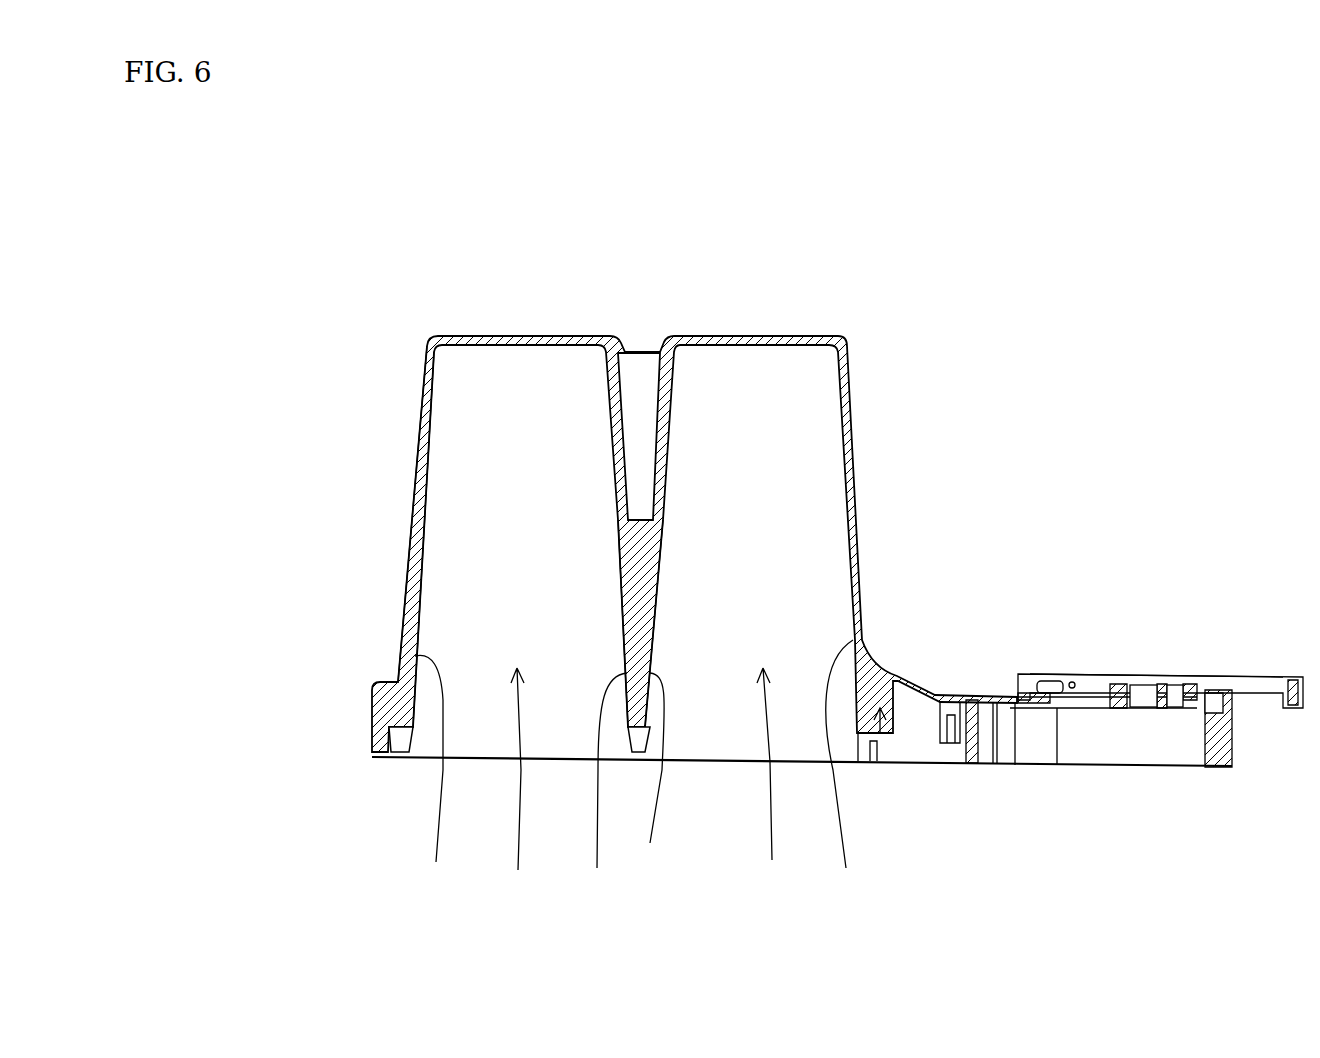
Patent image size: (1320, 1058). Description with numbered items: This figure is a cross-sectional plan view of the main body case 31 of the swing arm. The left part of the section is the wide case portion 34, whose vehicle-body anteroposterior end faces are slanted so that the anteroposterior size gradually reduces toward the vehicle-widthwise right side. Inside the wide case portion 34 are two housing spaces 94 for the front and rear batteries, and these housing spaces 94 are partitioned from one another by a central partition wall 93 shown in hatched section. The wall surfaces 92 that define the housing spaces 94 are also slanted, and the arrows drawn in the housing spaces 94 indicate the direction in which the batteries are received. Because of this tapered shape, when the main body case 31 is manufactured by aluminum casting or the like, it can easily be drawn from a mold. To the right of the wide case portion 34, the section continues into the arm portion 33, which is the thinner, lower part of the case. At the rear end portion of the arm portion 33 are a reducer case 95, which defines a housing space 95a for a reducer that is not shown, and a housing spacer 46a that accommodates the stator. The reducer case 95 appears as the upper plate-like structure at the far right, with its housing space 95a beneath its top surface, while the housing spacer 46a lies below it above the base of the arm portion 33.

The main body case 31 is at (655, 305).
The wide case portion 34 is at (425, 478).
The arm portion 33 is at (952, 700).
The wall surfaces 92 is at (637, 772).
The partition wall 93 is at (640, 582).
The housing spaces 94 is at (645, 786).
The housing spacer 46a is at (1111, 752).
The reducer case 95 is at (1258, 700).
The housing space 95a is at (1202, 662).